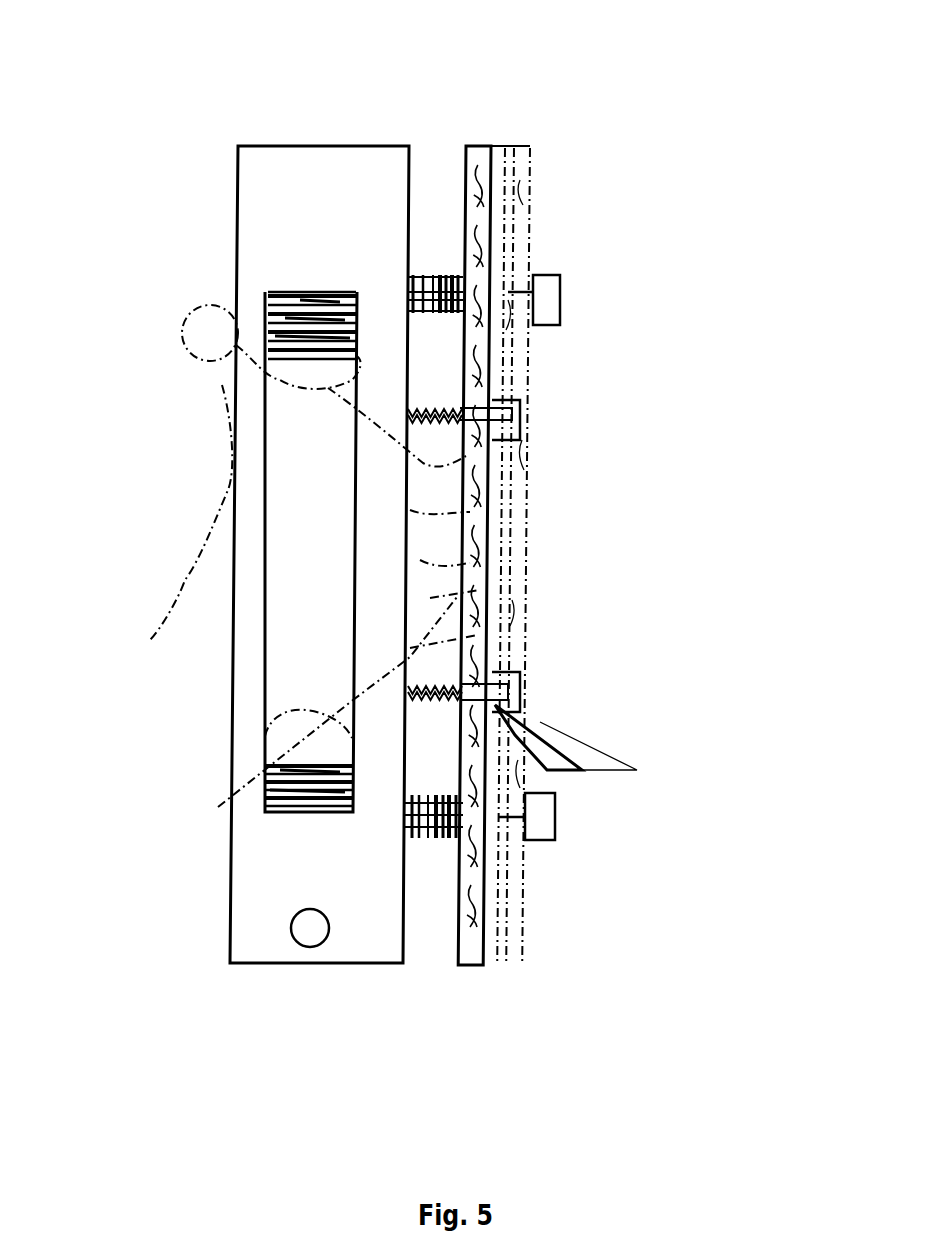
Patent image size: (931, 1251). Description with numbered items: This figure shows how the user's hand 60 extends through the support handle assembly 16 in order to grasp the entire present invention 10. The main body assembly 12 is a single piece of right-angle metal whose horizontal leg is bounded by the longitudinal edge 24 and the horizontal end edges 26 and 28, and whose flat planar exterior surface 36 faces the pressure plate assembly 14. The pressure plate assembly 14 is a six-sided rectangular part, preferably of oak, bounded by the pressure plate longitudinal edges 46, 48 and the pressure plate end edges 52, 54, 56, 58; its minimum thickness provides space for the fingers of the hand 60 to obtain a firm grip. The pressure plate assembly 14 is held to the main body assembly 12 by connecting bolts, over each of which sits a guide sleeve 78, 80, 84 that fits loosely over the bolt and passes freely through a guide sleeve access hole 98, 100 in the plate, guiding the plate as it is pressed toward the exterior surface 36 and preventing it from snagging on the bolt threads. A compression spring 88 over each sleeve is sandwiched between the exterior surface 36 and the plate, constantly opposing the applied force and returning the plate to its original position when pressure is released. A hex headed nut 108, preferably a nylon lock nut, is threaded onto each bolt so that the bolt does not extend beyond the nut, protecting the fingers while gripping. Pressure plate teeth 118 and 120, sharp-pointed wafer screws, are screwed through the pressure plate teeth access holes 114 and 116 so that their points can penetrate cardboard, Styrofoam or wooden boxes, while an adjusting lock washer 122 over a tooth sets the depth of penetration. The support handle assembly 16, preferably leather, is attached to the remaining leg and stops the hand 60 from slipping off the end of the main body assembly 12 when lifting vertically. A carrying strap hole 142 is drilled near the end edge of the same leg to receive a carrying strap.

The present invention 10 is at (137, 113).
The main body assembly 12 is at (358, 84).
The pressure plate assembly 14 is at (726, 120).
The support handle assembly 16 is at (168, 468).
The longitudinal edge 24 is at (233, 657).
The horizontal end edge 26 is at (259, 963).
The horizontal end edge 28 is at (255, 146).
The flat planar exterior surface 36 is at (265, 270).
The pressure plate longitudinal edge 46 is at (505, 186).
The pressure plate longitudinal edge 48 is at (467, 253).
The pressure plate end edge 52 is at (495, 146).
The pressure plate end edge 54 is at (482, 965).
The pressure plate end edge 56 is at (497, 968).
The pressure plate end edge 58 is at (467, 146).
The hand 60 is at (185, 578).
The guide sleeve 78 is at (415, 289).
The guide sleeve 80 is at (410, 810).
The guide sleeve 84 is at (440, 292).
The compression spring 88 is at (438, 840).
The guide sleeve access hole 98 is at (472, 313).
The guide sleeve access hole 100 is at (472, 835).
The hex headed nut 108 is at (560, 292).
The pressure plate teeth access hole 114 is at (517, 419).
The pressure plate teeth access hole 116 is at (497, 668).
The pressure plate tooth 118 is at (513, 403).
The pressure plate tooth 120 is at (497, 700).
The adjusting lock washer 122 is at (535, 441).
The carrying strap hole 142 is at (316, 947).